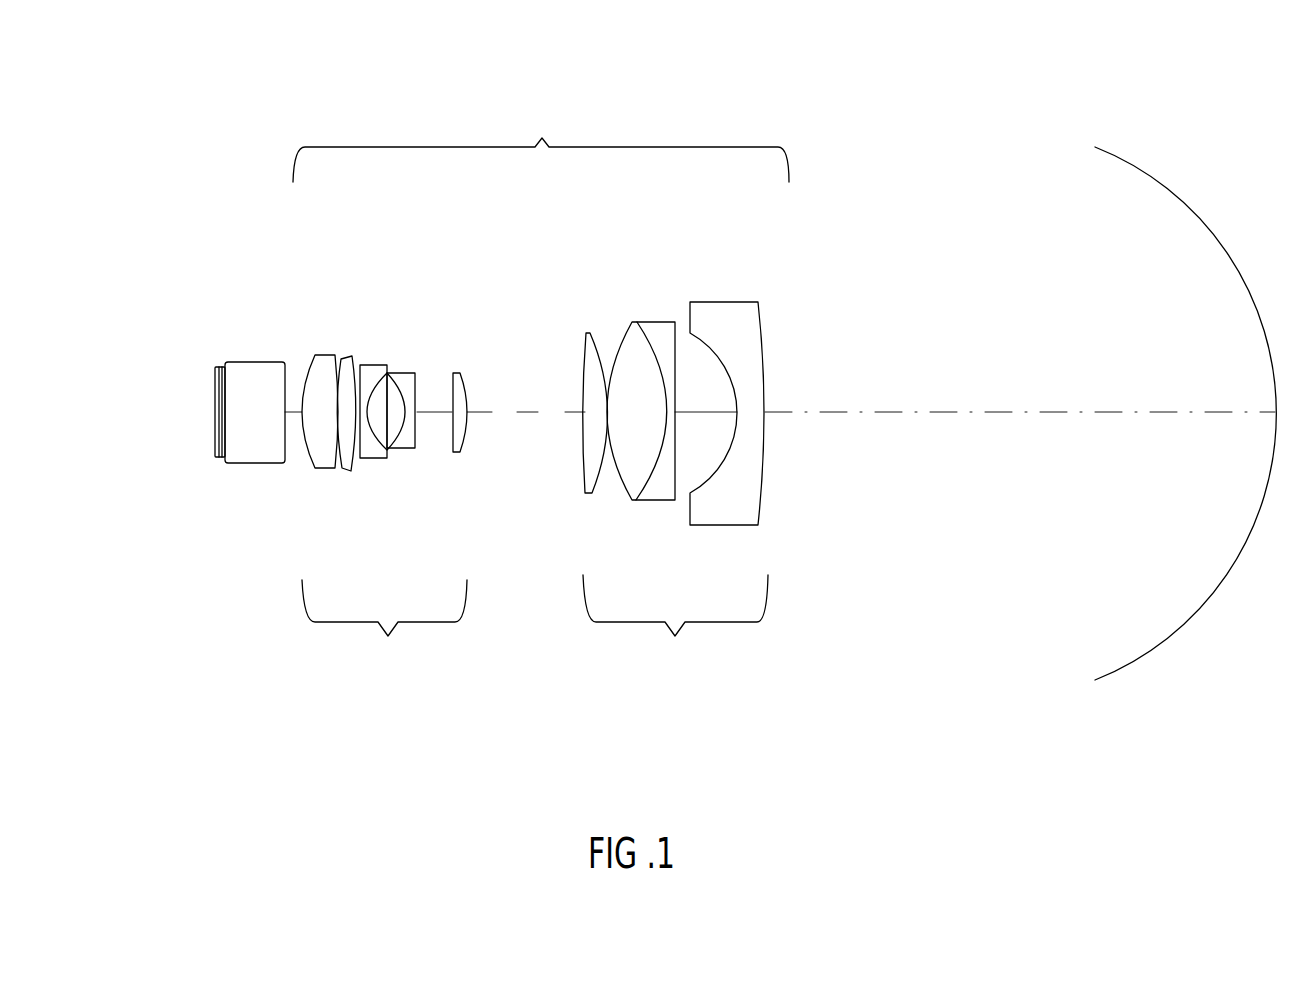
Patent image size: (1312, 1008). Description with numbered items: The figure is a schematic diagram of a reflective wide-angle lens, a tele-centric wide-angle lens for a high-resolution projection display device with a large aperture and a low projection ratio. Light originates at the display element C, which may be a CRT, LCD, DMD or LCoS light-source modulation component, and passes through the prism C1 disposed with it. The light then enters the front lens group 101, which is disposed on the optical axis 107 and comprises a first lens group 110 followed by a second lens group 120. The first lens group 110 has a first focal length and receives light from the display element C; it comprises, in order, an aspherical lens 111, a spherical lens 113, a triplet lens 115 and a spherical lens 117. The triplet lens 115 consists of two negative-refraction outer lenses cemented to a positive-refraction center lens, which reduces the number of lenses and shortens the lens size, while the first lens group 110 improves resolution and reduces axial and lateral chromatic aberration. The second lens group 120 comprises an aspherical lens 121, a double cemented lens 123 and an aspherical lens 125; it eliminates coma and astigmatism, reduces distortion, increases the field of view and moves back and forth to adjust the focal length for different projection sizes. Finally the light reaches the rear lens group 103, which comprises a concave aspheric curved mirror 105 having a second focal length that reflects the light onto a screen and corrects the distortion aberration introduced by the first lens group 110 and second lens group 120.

The front lens group 101 is at (542, 138).
The rear lens group 103 is at (1170, 72).
The curved mirror 105 is at (1172, 171).
The optical axis 107 is at (532, 453).
The first lens group 110 is at (388, 636).
The aspherical lens 111 is at (326, 346).
The spherical lens 113 is at (351, 465).
The triplet lens 115 is at (381, 346).
The spherical lens 117 is at (466, 470).
The second lens group 120 is at (675, 636).
The aspherical lens 121 is at (590, 320).
The double cemented lens 123 is at (654, 309).
The aspherical lens 125 is at (749, 293).
The display element C is at (209, 393).
The prism C1 is at (241, 469).